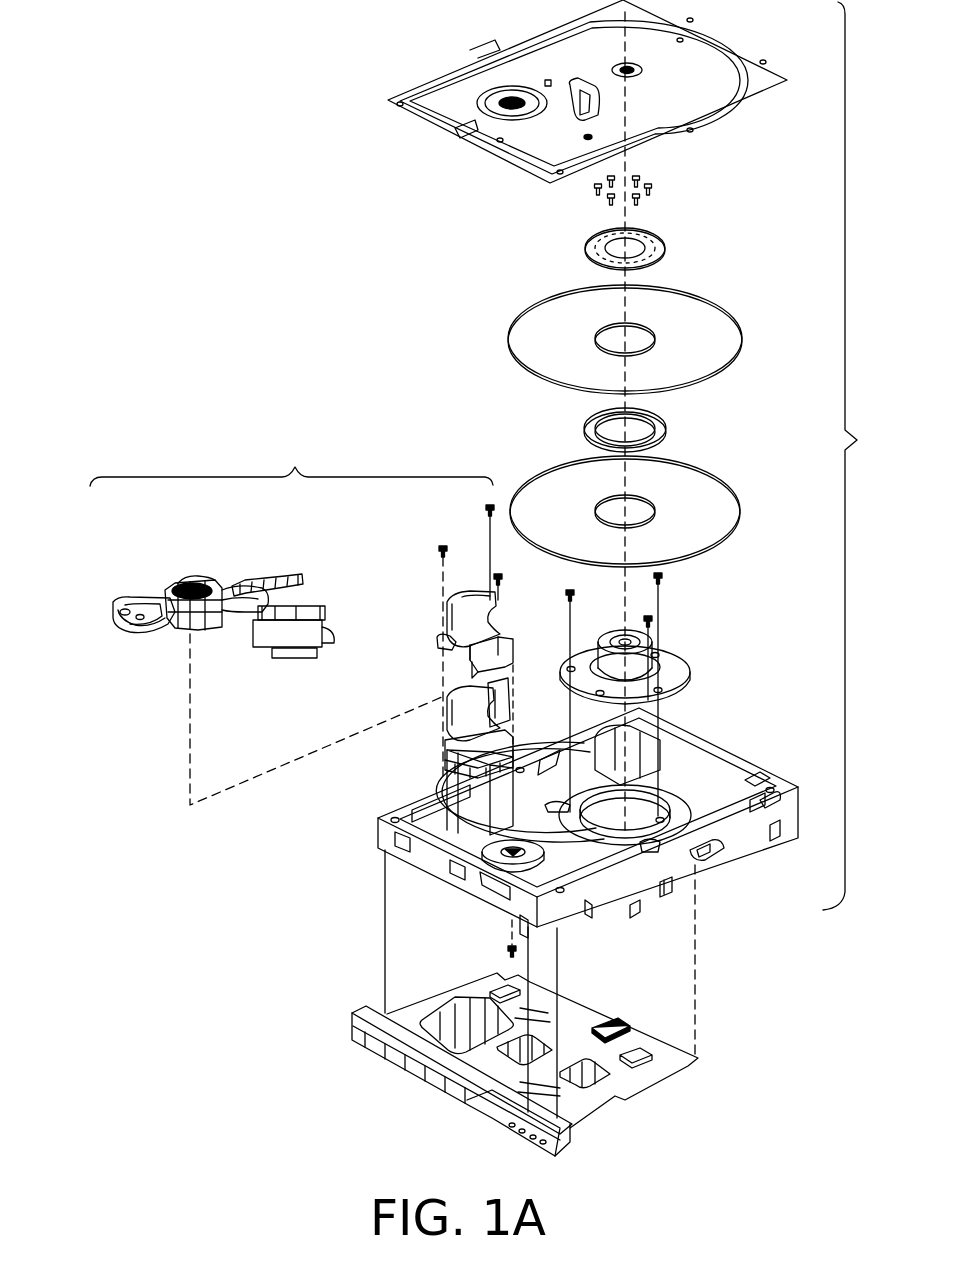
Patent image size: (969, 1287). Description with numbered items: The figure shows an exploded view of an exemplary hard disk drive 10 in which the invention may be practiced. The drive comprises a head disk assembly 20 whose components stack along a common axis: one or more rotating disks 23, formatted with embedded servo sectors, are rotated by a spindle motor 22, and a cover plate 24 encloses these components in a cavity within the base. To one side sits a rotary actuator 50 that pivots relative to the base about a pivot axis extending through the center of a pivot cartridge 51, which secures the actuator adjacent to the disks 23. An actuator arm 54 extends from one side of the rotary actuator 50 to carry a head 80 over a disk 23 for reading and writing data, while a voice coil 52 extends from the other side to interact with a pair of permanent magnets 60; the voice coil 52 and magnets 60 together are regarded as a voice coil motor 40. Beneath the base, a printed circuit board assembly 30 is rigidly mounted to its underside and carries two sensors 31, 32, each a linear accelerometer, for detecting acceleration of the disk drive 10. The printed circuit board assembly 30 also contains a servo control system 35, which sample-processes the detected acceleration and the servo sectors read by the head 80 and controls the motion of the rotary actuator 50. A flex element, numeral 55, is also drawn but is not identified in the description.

The hard disk drive 10 is at (263, 103).
The head disk assembly 20 is at (865, 456).
The spindle motor 22 is at (678, 659).
The rotating disks 23 is at (730, 313).
The cover plate 24 is at (752, 44).
The printed circuit board assembly 30 is at (597, 1113).
The sensor 31 is at (633, 1058).
The sensor 32 is at (487, 990).
The servo control system 35 is at (573, 1070).
The voice coil motor 40 is at (291, 458).
The rotary actuator 50 is at (184, 545).
The pivot cartridge 51 is at (185, 585).
The voice coil 52 is at (112, 603).
The actuator arm 54 is at (218, 588).
The flexible printed circuit 55 is at (247, 585).
The permanent magnets 60 is at (442, 700).
The head 80 is at (303, 572).